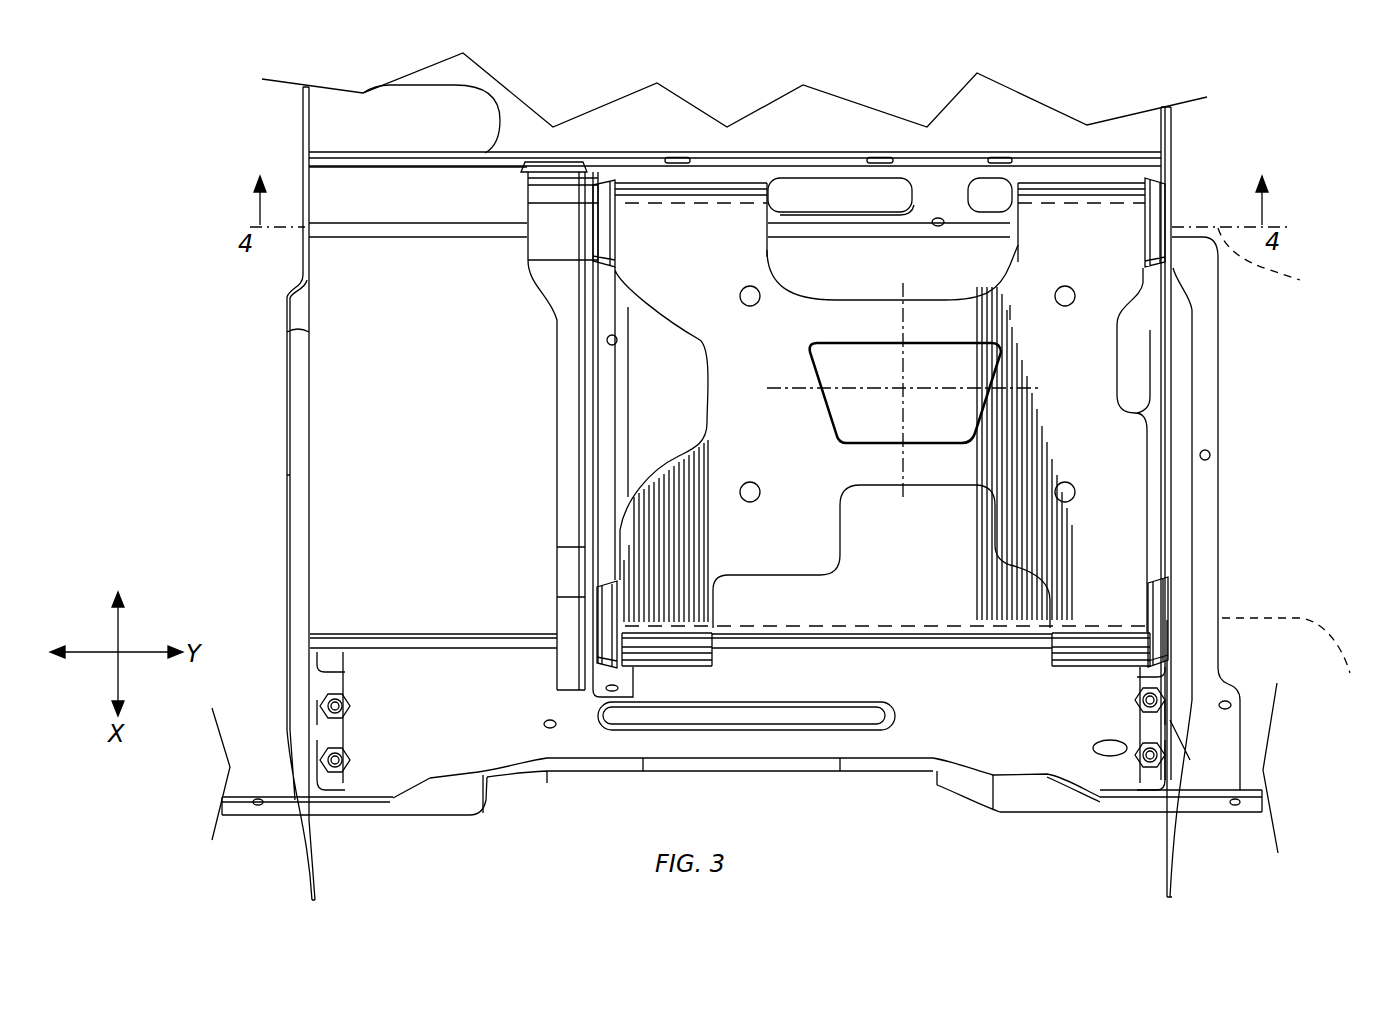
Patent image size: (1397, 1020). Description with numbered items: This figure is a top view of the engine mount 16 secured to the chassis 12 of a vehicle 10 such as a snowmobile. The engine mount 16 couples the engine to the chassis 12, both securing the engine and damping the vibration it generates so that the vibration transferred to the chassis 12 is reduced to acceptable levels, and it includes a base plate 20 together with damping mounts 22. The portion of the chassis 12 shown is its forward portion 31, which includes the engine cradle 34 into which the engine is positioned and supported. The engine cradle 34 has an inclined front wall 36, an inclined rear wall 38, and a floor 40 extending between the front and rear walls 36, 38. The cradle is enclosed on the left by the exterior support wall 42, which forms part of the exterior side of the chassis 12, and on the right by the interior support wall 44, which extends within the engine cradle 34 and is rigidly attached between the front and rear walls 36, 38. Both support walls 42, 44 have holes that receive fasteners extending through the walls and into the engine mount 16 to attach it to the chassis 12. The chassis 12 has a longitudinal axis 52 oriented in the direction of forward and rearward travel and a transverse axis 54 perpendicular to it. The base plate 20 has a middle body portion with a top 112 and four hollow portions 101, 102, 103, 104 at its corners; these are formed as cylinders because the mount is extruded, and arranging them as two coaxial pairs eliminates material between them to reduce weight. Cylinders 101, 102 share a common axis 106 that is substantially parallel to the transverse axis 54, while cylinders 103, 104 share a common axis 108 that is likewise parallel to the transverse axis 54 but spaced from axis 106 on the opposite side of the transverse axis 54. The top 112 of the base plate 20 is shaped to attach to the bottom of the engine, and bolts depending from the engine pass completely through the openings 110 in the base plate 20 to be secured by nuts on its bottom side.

The vehicle 10 is at (286, 166).
The chassis 12 is at (287, 405).
The engine mount 16 is at (935, 193).
The base plate 20 is at (1012, 312).
The damping mounts 22 is at (598, 180).
The forward portion 31 is at (290, 553).
The engine cradle 34 is at (435, 648).
The inclined front wall 36 is at (522, 634).
The inclined rear wall 38 is at (415, 237).
The floor 40 is at (437, 464).
The exterior support wall 42 is at (1173, 137).
The interior support wall 44 is at (560, 470).
The longitudinal axis 52 is at (1010, 455).
The transverse axis 54 is at (785, 388).
The hollow portion 101 is at (692, 183).
The hollow portion 102 is at (1075, 180).
The hollow portion 103 is at (668, 660).
The hollow portion 104 is at (1098, 660).
The common axis 106 is at (1254, 464).
The common axis 108 is at (1301, 662).
The openings 110 is at (1055, 296).
The top 112 is at (1122, 567).